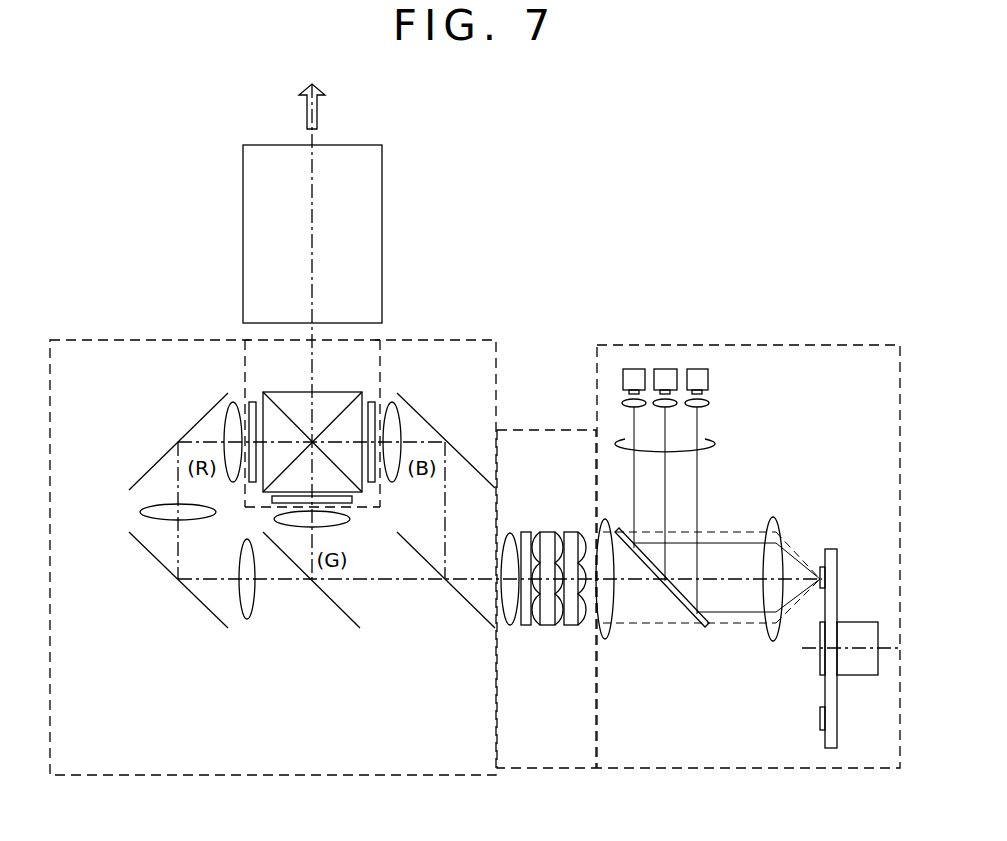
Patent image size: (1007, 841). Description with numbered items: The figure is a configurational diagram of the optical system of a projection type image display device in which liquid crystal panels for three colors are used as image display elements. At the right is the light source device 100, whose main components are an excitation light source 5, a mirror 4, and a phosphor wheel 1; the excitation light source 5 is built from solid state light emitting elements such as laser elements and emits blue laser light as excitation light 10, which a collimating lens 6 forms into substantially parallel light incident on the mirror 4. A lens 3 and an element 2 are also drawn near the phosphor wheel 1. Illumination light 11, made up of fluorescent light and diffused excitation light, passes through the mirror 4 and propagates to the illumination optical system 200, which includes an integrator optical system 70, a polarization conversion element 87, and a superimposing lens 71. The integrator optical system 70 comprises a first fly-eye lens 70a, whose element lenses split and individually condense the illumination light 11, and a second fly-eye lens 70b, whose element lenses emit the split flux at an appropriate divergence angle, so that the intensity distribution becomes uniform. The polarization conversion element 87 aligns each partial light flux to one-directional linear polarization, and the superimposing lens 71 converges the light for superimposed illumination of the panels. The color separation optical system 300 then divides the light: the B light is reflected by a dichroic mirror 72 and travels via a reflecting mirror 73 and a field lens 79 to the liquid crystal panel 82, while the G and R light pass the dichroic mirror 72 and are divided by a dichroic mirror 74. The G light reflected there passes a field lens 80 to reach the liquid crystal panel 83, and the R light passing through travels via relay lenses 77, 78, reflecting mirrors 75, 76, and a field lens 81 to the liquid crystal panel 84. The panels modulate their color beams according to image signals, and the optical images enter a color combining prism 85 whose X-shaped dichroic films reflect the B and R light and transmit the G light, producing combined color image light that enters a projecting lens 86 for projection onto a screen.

The phosphor wheel 1 is at (838, 595).
The photodetector 2 is at (823, 565).
The condensing lens 3 is at (778, 516).
The mirror 4 is at (678, 600).
The excitation light source 5 is at (708, 375).
The collimating lens 6 is at (710, 403).
The excitation light 10 is at (705, 439).
The illumination light 11 is at (605, 638).
The integrator optical system 70 is at (552, 640).
The first fly-eye lens 70a is at (571, 625).
The second fly-eye lens 70b is at (548, 625).
The superimposing lens 71 is at (510, 625).
The dichroic mirror 72 is at (478, 612).
The reflecting mirror 73 is at (468, 462).
The dichroic mirror 74 is at (340, 612).
The reflecting mirror 75 is at (188, 593).
The reflecting mirror 76 is at (158, 463).
The relay lens 77 is at (247, 620).
The relay lens 78 is at (140, 512).
The field lens 79 is at (400, 420).
The field lens 80 is at (340, 525).
The field lens 81 is at (225, 425).
The liquid crystal panel 82 is at (371, 402).
The liquid crystal panel 83 is at (295, 497).
The liquid crystal panel 84 is at (252, 402).
The color combining prism 85 is at (330, 397).
The projecting lens 86 is at (382, 213).
The polarization conversion element 87 is at (526, 532).
The light source device 100 is at (737, 345).
The illumination optical system 200 is at (538, 428).
The color separation optical system 300 is at (440, 338).